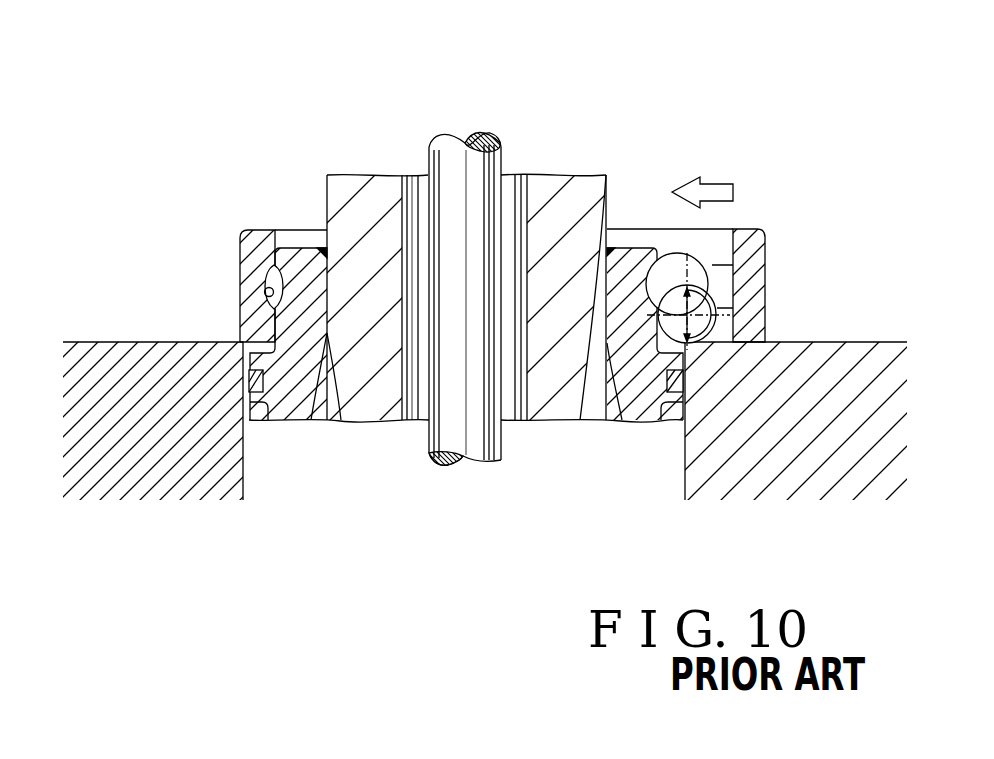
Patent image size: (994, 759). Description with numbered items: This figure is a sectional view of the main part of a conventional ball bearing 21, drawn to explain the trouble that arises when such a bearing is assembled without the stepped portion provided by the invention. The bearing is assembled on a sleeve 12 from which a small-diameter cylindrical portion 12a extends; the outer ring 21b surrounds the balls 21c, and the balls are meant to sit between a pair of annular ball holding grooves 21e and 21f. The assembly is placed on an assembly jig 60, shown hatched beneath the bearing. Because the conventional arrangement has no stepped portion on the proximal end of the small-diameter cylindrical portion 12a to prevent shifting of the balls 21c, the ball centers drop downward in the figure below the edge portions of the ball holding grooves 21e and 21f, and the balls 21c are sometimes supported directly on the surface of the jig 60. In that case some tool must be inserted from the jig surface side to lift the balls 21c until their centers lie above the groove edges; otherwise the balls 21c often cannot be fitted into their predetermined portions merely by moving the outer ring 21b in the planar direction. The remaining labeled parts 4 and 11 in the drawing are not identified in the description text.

The rotating shaft 4 is at (475, 445).
The rotor hub 11 is at (365, 400).
The sleeve 12 is at (293, 397).
The small-diameter cylindrical portion 12a is at (290, 248).
The ball bearing 21 is at (772, 218).
The outer ring 21b is at (255, 240).
The balls 21c is at (713, 265).
The annular ball holding groove 21e is at (272, 280).
The annular ball holding groove 21f is at (266, 294).
The assembly jig 60 is at (780, 408).